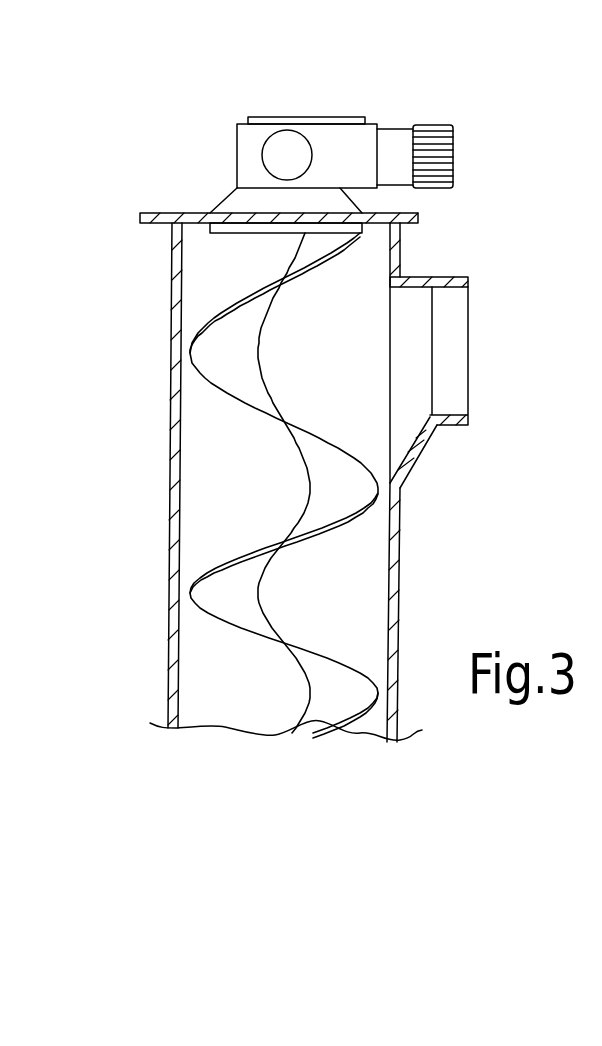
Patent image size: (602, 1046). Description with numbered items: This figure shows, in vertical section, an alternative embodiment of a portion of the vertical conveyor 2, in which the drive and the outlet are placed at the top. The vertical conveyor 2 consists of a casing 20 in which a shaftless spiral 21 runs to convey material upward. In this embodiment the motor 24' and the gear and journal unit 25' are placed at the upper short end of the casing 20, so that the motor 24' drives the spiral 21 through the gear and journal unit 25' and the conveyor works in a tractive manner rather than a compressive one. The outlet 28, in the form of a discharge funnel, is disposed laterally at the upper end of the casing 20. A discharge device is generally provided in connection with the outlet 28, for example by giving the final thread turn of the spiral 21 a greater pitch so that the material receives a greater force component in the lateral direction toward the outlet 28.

The vertical conveyor 2 is at (136, 467).
The casing 20 is at (168, 632).
The shaftless spiral 21 is at (348, 683).
The motor 24' is at (480, 122).
The gear and journal unit 25' is at (277, 122).
The outlet 28 is at (463, 317).